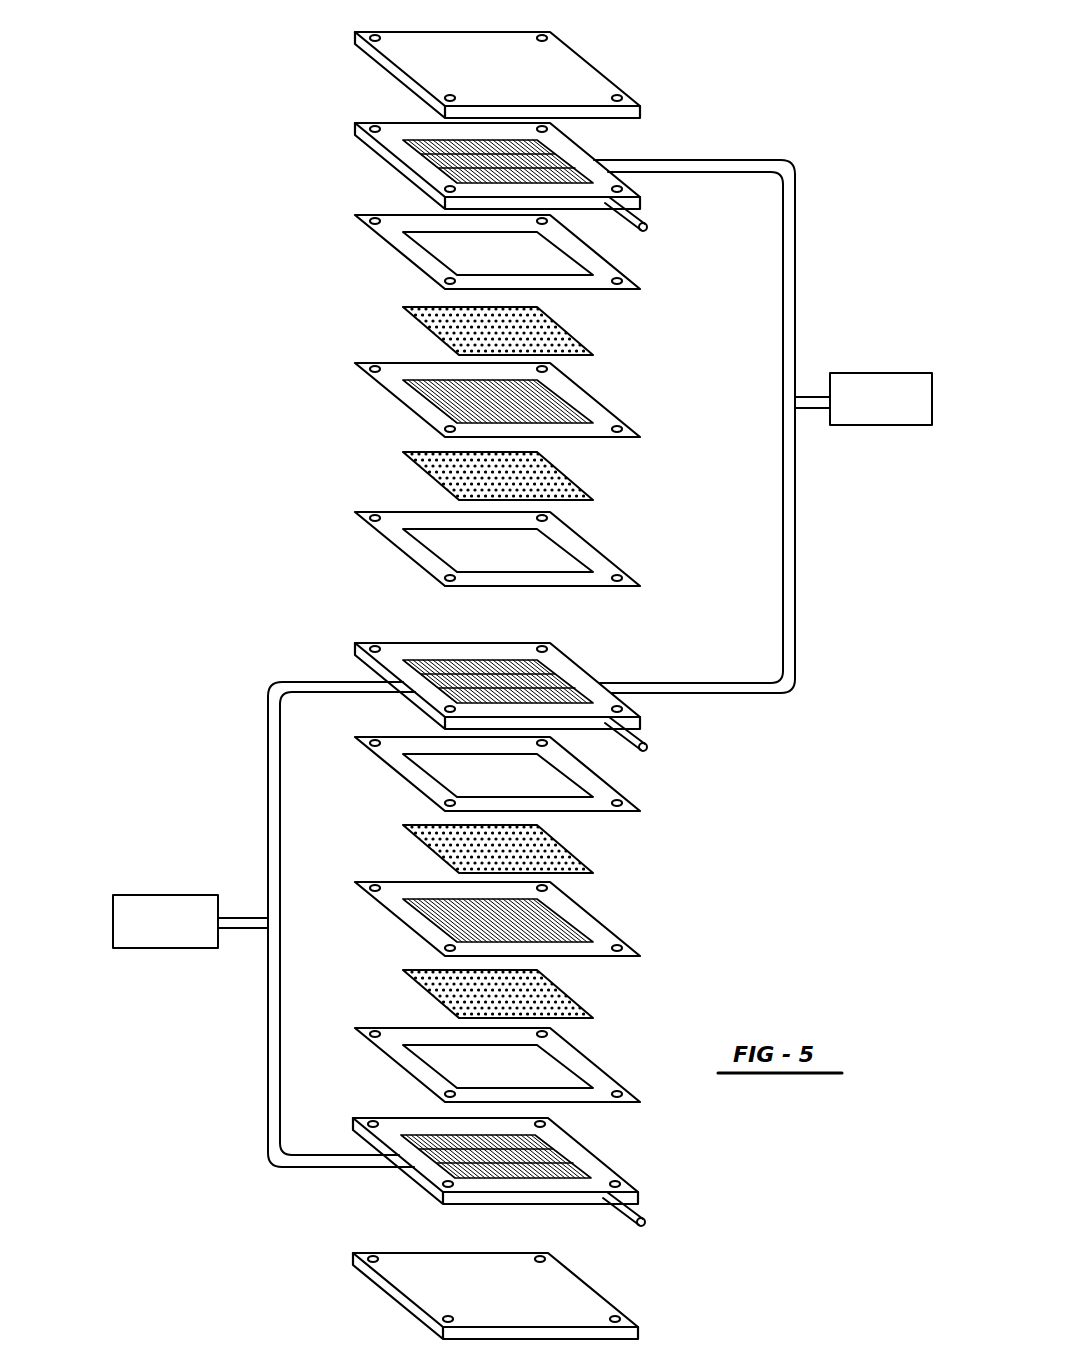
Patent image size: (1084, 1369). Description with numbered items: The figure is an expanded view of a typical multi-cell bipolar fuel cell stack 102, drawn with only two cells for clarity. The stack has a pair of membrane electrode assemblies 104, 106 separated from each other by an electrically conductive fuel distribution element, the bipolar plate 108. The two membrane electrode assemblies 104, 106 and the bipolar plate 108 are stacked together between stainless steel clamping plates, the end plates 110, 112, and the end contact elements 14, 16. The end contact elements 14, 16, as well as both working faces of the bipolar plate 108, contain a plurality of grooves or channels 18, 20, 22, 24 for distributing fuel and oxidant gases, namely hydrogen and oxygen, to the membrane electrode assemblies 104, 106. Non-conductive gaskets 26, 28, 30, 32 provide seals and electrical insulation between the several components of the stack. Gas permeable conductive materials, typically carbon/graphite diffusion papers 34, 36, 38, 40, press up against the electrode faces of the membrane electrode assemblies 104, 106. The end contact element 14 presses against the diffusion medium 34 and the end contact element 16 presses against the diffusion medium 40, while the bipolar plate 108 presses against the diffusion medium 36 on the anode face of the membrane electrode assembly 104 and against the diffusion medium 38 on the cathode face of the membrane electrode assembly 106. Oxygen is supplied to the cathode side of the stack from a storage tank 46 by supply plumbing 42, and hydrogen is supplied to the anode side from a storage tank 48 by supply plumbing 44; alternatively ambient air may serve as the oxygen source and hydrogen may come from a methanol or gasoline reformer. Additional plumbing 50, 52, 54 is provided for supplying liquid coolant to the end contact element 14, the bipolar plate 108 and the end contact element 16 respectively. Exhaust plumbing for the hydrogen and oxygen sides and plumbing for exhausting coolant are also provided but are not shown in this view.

The bipolar fuel cell stack 102 is at (824, 120).
The end plate 110 is at (400, 83).
The end contact element 14 is at (488, 166).
The channels 18 is at (515, 158).
The plumbing 50 is at (643, 212).
The gasket 26 is at (400, 258).
The carbon/graphite diffusion paper 34 is at (415, 335).
The membrane electrode assembly 104 is at (395, 400).
The diffusion medium 36 is at (425, 472).
The gasket 28 is at (400, 548).
The channels 20 is at (494, 700).
The bipolar plate 108 is at (494, 699).
The channels 22 is at (580, 728).
The plumbing 52 is at (633, 734).
The gasket 30 is at (580, 813).
The carbon graphite diffusion medium 38 is at (567, 858).
The membrane electrode assembly 106 is at (600, 924).
The carbon/graphite diffusion paper 40 is at (565, 1005).
The gasket 32 is at (598, 1078).
The end contact element 16 is at (540, 1162).
The channels 24 is at (555, 1152).
The plumbing 54 is at (628, 1208).
The end plate 112 is at (594, 1284).
The supply plumbing 42 is at (795, 553).
The storage tank 46 is at (900, 373).
The supply plumbing 44 is at (268, 812).
The storage tank 48 is at (165, 895).